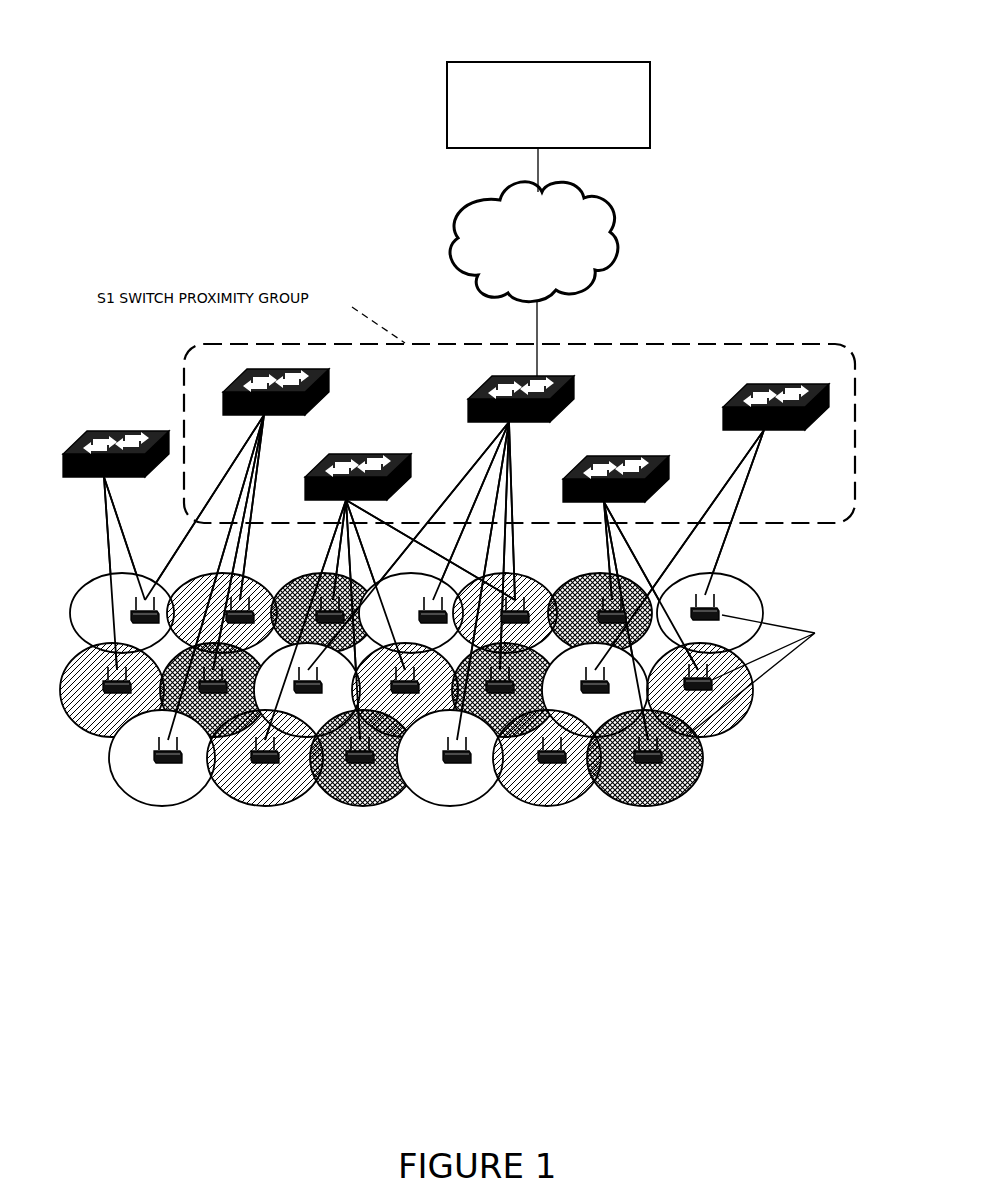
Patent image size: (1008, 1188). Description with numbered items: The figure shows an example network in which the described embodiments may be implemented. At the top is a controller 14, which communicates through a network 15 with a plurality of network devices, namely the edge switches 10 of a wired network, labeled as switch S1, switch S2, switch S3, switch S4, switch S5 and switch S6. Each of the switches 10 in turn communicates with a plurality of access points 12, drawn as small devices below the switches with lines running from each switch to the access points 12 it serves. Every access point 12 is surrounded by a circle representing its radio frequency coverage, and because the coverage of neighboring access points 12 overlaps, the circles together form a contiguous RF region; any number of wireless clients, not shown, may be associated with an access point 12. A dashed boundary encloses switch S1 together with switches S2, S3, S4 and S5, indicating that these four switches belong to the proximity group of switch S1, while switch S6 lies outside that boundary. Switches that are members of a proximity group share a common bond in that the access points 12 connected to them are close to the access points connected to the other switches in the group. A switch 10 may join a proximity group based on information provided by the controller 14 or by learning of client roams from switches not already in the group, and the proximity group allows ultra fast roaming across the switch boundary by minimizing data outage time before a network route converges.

The edge switch 10 is at (425, 440).
The access point 12 is at (137, 738).
The controller 14 is at (556, 62).
The network 15 is at (617, 236).
The switch S1 is at (549, 411).
The switch S2 is at (290, 413).
The switch S3 is at (388, 493).
The switch S4 is at (644, 491).
The switch S5 is at (786, 425).
The switch S6 is at (63, 470).